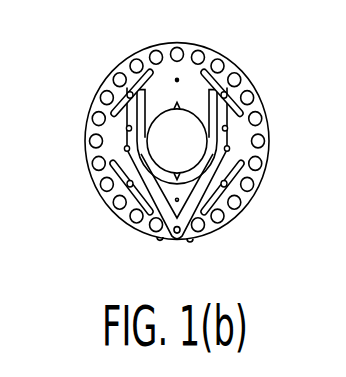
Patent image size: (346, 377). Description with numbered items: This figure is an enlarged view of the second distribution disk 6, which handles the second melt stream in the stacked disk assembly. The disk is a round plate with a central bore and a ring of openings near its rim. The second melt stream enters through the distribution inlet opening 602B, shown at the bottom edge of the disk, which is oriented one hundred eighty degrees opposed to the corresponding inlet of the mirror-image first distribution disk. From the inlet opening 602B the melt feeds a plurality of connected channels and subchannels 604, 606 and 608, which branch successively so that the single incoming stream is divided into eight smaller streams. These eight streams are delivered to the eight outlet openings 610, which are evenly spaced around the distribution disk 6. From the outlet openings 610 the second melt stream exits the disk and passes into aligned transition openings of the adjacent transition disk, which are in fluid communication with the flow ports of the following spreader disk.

The second distribution disk 6 is at (224, 55).
The distribution inlet opening 602B is at (176, 241).
The channel 604 is at (206, 220).
The subchannel 606 is at (130, 152).
The subchannel 608 is at (122, 215).
The outlet openings 610 is at (256, 98).